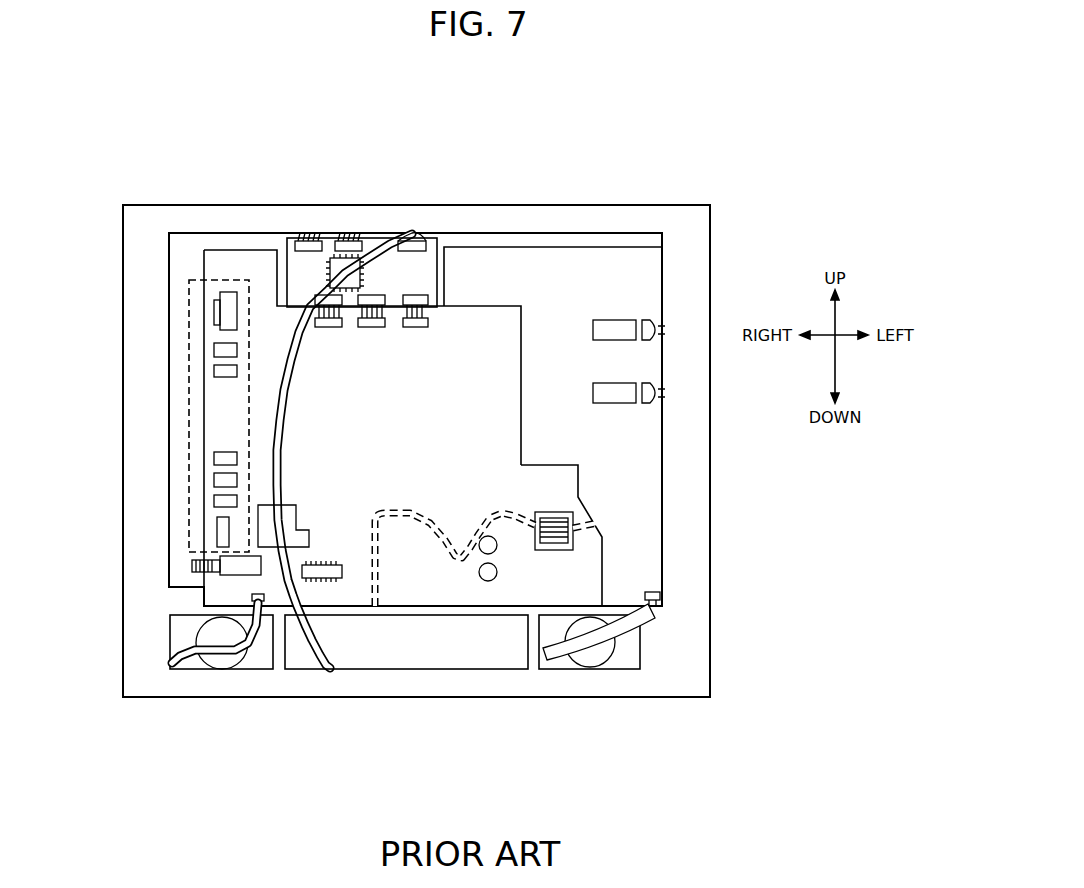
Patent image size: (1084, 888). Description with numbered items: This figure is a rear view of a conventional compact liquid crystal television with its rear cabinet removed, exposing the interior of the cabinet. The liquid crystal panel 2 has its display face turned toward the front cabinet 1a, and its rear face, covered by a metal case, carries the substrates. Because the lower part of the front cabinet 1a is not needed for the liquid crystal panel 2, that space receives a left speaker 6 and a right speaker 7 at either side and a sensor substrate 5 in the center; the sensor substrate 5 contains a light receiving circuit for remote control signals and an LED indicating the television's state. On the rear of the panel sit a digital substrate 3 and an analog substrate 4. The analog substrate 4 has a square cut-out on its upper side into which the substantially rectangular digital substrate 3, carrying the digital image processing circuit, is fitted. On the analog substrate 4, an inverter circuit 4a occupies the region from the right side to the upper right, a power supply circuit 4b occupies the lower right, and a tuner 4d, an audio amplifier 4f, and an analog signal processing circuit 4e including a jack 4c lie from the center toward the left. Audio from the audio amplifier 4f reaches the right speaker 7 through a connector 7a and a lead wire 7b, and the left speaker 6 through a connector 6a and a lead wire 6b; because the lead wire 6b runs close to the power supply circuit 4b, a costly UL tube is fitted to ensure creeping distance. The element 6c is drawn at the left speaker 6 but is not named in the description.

The front cabinet 1a is at (710, 242).
The liquid crystal panel 2 is at (600, 232).
The digital substrate 3 is at (427, 238).
The analog substrate 4 is at (662, 297).
The inverter circuit 4a is at (637, 497).
The power supply circuit 4b is at (560, 573).
The jack 4c is at (213, 280).
The tuner 4d is at (192, 562).
The analog signal processing circuit 4e is at (483, 350).
The audio amplifier 4f is at (332, 578).
The sensor substrate 5 is at (435, 670).
The left speaker 6 is at (640, 657).
The connector 6a is at (660, 596).
The lead wire 6b is at (540, 662).
The fan 6c is at (600, 668).
The right speaker 7 is at (170, 643).
The connector 7a is at (257, 596).
The lead wire 7b is at (258, 606).